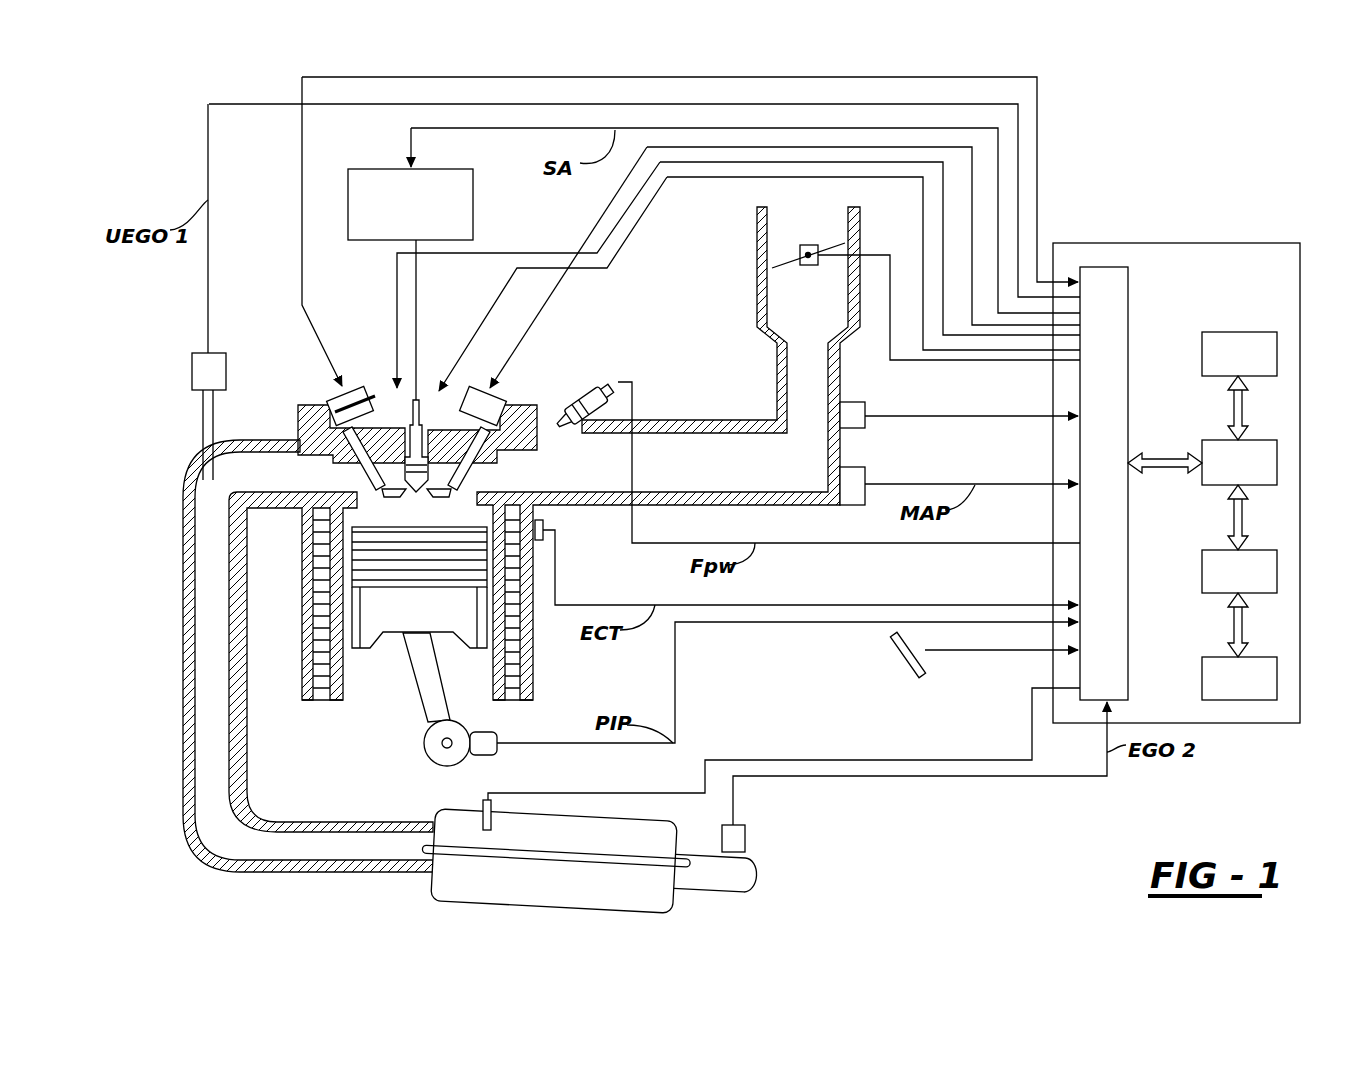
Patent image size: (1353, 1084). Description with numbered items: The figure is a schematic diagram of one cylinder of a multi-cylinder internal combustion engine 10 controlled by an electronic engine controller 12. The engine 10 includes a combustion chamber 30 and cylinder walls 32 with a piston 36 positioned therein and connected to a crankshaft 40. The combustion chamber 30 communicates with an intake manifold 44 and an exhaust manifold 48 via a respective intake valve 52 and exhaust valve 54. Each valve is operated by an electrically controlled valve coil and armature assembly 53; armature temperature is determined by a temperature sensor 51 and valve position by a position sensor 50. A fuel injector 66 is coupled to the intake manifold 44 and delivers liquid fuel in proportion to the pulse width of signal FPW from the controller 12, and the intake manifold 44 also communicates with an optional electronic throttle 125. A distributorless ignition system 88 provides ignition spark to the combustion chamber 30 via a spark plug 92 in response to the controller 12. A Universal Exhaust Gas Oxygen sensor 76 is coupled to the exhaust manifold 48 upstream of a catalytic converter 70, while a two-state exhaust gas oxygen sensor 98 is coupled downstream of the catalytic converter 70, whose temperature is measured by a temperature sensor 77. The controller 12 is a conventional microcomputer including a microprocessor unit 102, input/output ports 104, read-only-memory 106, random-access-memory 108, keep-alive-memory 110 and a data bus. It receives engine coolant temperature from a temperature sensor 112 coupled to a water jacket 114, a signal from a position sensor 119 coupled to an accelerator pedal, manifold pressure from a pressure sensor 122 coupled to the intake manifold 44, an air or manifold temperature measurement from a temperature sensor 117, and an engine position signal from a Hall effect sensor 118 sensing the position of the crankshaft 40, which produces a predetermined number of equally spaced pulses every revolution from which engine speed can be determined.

The internal combustion engine 10 is at (295, 398).
The electronic engine controller 12 is at (1168, 243).
The combustion chamber 30 is at (415, 508).
The cylinder walls 32 is at (345, 692).
The piston 36 is at (409, 630).
The crankshaft 40 is at (424, 745).
The intake manifold 44 is at (768, 474).
The exhaust manifold 48 is at (210, 533).
The position sensor 50 is at (380, 381).
The temperature sensor 51 is at (440, 388).
The intake valve 52 is at (497, 482).
The valve coil and armature assembly 53 is at (343, 378).
The exhaust valve 54 is at (365, 487).
The fuel injector 66 is at (570, 388).
The catalytic converter 70 is at (515, 900).
The Universal Exhaust Gas Oxygen sensor 76 is at (192, 362).
The temperature sensor 77 is at (480, 818).
The distributorless ignition system 88 is at (476, 203).
The spark plug 92 is at (422, 393).
The two-state exhaust gas oxygen sensor 98 is at (758, 823).
The microprocessor unit 102 is at (1210, 440).
The input/output ports 104 is at (1127, 290).
The read-only-memory 106 is at (1240, 333).
The random-access-memory 108 is at (1210, 550).
The keep-alive-memory 110 is at (1210, 657).
The temperature sensor 112 is at (551, 530).
The water jacket 114 is at (320, 698).
The temperature sensor 117 is at (869, 398).
The Hall effect sensor 118 is at (493, 755).
The position sensor 119 is at (908, 665).
The pressure sensor 122 is at (869, 478).
The electronic throttle 125 is at (795, 240).